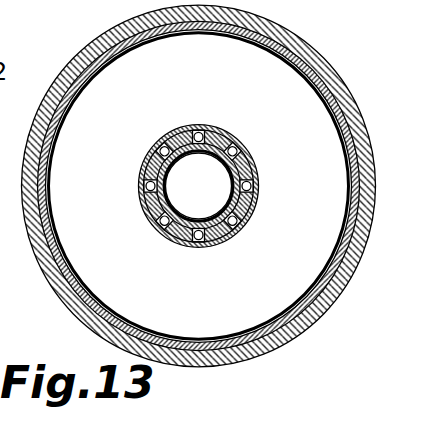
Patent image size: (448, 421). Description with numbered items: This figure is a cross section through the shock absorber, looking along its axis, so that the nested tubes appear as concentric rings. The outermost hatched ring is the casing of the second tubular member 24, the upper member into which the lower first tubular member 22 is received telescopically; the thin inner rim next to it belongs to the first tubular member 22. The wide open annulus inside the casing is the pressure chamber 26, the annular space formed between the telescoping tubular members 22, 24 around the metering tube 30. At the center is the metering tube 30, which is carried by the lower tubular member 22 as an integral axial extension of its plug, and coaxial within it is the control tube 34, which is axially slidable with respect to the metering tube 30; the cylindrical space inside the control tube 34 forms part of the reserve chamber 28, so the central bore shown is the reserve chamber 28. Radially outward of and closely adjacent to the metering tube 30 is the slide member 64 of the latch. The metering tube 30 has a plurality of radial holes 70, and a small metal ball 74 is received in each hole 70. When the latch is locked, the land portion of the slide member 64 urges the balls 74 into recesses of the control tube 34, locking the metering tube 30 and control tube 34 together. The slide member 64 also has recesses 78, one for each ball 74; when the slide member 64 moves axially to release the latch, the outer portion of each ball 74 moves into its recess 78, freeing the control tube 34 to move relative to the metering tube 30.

The first tubular member 22 is at (325, 100).
The second tubular member 24 is at (310, 56).
The pressure chamber 26 is at (313, 151).
The reserve chamber 28 is at (212, 198).
The metering tube 30 is at (212, 247).
The control tube 34 is at (222, 133).
The slide member 64 is at (254, 212).
The holes 70 is at (160, 232).
The ball 74 is at (141, 190).
The recesses 78 is at (240, 227).